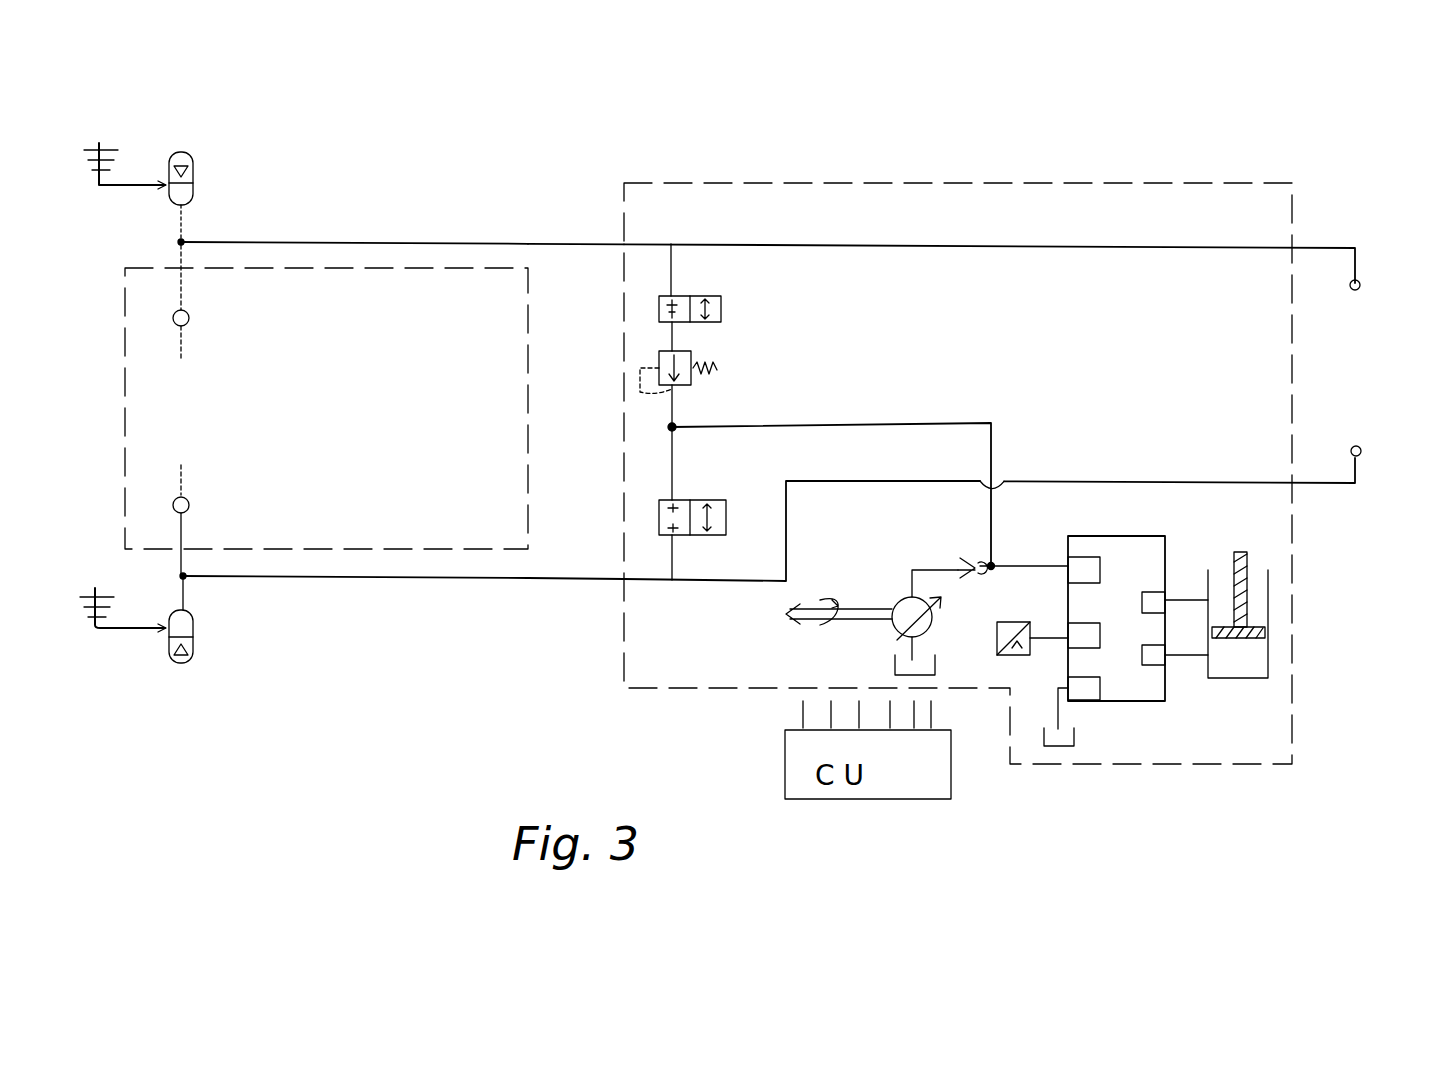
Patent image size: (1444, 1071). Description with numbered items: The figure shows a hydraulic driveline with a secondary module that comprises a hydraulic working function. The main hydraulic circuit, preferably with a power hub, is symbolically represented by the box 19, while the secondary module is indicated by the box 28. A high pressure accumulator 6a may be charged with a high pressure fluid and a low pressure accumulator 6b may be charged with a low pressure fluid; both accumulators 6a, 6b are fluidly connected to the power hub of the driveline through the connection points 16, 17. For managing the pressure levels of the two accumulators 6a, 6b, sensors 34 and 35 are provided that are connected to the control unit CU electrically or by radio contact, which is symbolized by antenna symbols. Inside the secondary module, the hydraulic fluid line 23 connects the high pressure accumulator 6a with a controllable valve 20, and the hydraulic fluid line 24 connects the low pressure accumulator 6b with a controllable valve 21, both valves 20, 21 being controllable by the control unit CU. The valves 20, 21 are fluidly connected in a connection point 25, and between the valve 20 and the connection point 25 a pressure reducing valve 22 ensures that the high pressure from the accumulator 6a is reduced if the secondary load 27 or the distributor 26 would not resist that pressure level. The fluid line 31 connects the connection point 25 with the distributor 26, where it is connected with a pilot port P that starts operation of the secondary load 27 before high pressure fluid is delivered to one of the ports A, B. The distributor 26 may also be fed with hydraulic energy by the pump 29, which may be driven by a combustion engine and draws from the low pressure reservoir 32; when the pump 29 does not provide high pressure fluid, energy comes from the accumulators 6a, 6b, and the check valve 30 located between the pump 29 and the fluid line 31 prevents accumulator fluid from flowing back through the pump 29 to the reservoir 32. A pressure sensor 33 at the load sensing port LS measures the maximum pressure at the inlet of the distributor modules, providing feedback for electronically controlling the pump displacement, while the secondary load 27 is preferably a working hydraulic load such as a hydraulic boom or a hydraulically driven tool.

The sensor 34 is at (165, 180).
The high pressure accumulator 6a is at (196, 194).
The connection point 16 is at (1362, 283).
The connection point 17 is at (1362, 450).
The main hydraulic circuit 19 is at (392, 268).
The hydraulic fluid line 23 is at (549, 242).
The hydraulic fluid line 24 is at (528, 594).
The secondary module 28 is at (1110, 183).
The controllable valve 20 is at (726, 307).
The pressure reducing valve 22 is at (714, 350).
The connection point 25 is at (668, 427).
The fluid line 31 is at (907, 418).
The controllable valve 21 is at (735, 497).
The pump 29 is at (897, 600).
The check valve 30 is at (958, 555).
The low pressure reservoir 32 is at (890, 663).
The pressure sensor 33 is at (996, 632).
The distributor 26 is at (1113, 536).
The secondary load 27 is at (1275, 607).
The low pressure accumulator 6b is at (190, 665).
The sensor 35 is at (165, 632).